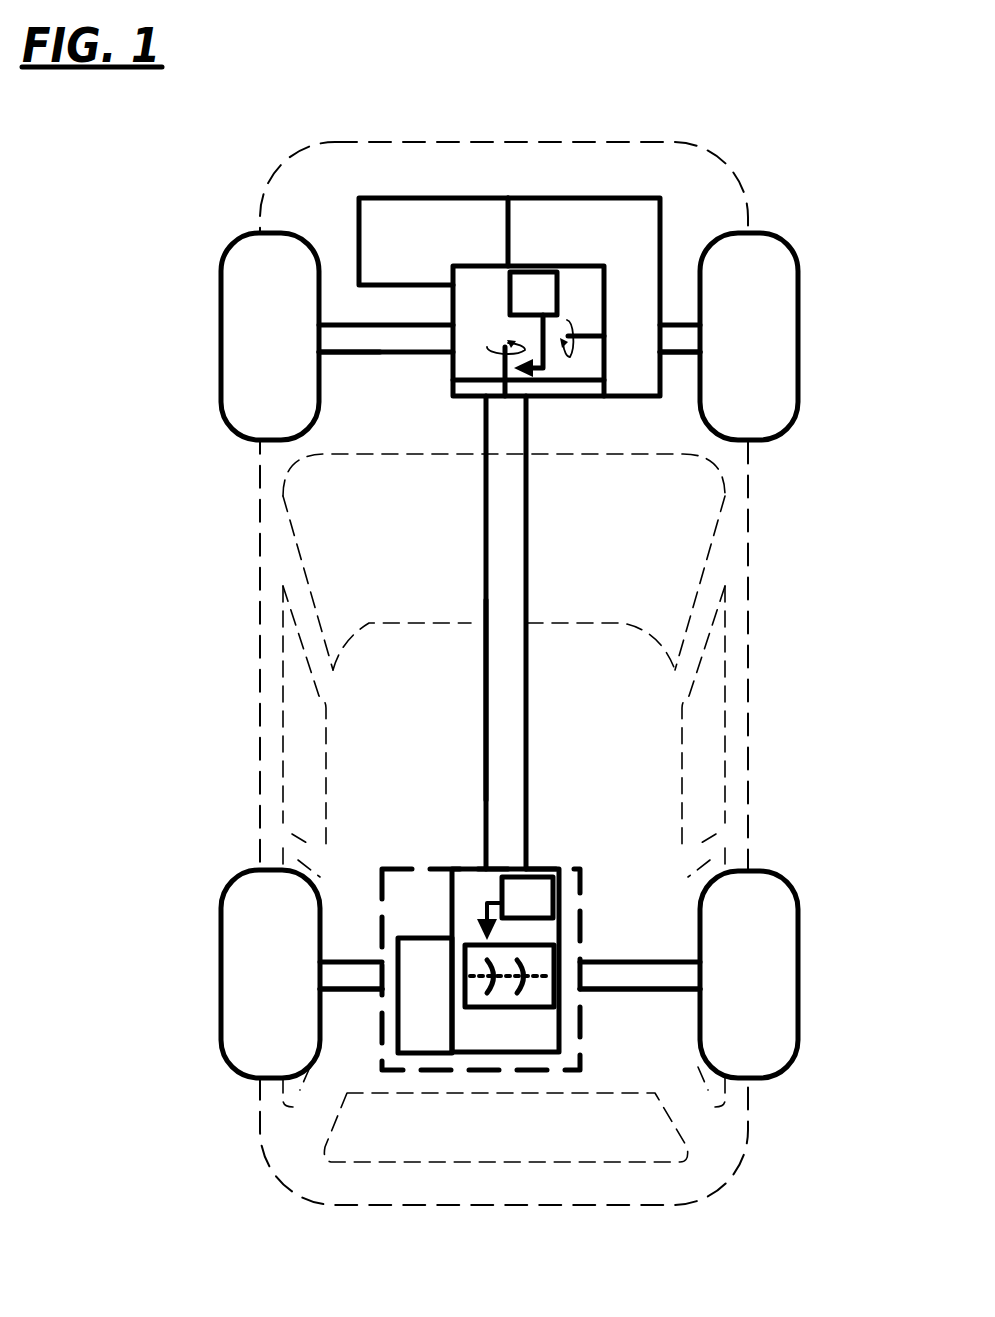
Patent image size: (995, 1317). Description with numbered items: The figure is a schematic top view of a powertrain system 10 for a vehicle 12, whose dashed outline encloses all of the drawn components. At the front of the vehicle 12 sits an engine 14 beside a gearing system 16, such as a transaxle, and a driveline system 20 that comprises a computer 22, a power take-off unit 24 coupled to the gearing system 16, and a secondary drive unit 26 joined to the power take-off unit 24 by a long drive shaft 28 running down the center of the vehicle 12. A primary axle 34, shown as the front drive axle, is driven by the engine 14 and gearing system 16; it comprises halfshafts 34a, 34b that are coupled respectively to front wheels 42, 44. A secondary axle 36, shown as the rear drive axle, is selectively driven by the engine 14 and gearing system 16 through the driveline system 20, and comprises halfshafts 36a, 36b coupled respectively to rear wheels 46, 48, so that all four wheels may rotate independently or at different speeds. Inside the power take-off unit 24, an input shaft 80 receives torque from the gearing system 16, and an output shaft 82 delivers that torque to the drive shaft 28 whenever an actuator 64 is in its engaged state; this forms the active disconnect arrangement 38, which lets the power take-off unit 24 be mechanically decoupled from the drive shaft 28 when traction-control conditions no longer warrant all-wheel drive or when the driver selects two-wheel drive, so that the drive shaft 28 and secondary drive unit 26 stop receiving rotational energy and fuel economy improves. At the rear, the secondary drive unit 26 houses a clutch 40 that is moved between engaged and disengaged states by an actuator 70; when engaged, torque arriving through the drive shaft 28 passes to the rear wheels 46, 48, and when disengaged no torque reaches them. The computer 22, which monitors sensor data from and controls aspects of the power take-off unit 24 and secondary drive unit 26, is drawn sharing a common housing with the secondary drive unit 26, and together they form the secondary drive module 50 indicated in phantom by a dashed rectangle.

The powertrain system 10 is at (690, 192).
The vehicle 12 is at (521, 132).
The engine 14 is at (427, 258).
The gearing system 16 is at (572, 237).
The driveline system 20 is at (545, 703).
The computer 22 is at (412, 1012).
The power take-off unit 24 is at (463, 305).
The secondary drive unit 26 is at (483, 1057).
The drive shaft 28 is at (492, 567).
The primary axle 34 is at (378, 368).
The halfshaft 34a is at (355, 355).
The halfshaft 34b is at (680, 355).
The secondary axle 36 is at (621, 1008).
The halfshaft 36a is at (363, 992).
The halfshaft 36b is at (672, 992).
The active disconnect arrangement 38 is at (550, 440).
The clutch 40 is at (520, 1008).
The wheel 42 is at (256, 352).
The wheel 44 is at (735, 352).
The wheel 46 is at (256, 990).
The wheel 48 is at (735, 990).
The secondary drive module 50 is at (583, 922).
The actuator 64 is at (520, 311).
The actuator 70 is at (514, 912).
The input shaft 80 is at (592, 342).
The output shaft 82 is at (503, 378).